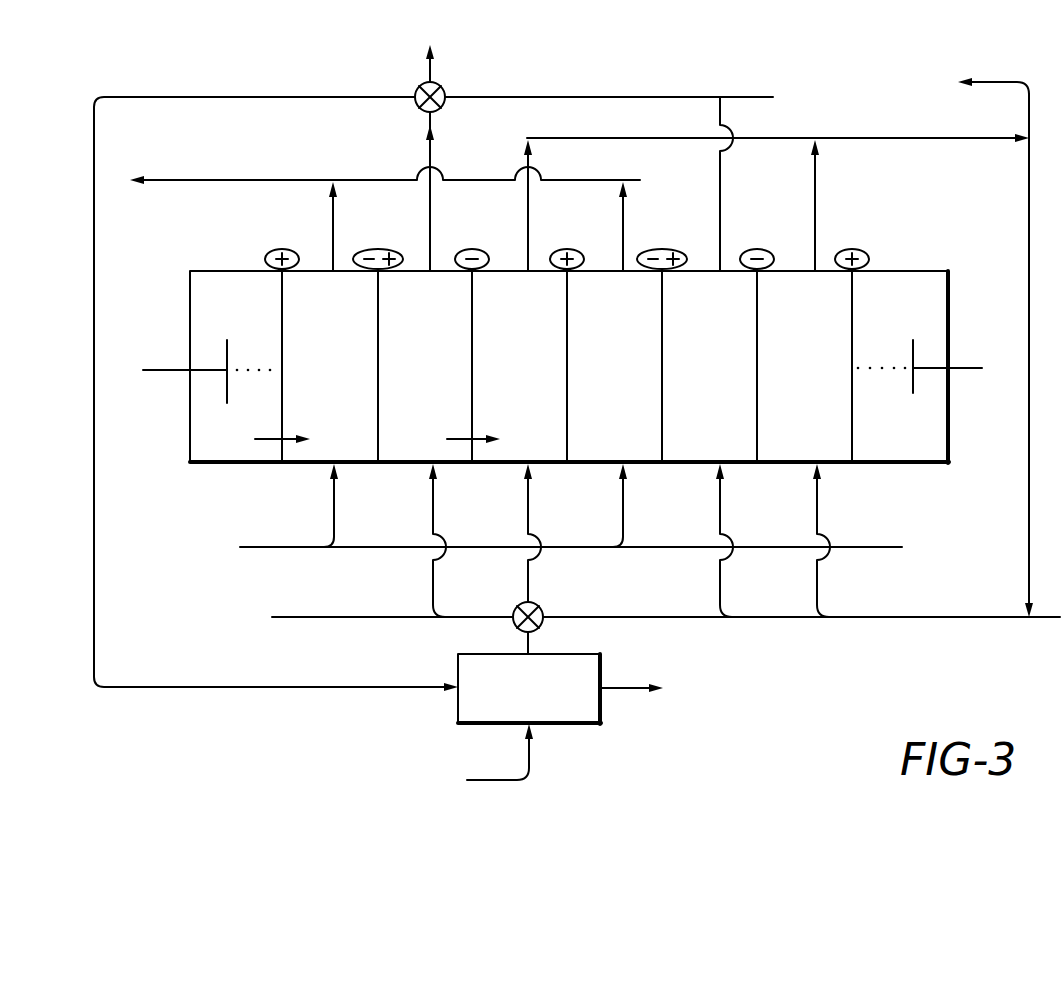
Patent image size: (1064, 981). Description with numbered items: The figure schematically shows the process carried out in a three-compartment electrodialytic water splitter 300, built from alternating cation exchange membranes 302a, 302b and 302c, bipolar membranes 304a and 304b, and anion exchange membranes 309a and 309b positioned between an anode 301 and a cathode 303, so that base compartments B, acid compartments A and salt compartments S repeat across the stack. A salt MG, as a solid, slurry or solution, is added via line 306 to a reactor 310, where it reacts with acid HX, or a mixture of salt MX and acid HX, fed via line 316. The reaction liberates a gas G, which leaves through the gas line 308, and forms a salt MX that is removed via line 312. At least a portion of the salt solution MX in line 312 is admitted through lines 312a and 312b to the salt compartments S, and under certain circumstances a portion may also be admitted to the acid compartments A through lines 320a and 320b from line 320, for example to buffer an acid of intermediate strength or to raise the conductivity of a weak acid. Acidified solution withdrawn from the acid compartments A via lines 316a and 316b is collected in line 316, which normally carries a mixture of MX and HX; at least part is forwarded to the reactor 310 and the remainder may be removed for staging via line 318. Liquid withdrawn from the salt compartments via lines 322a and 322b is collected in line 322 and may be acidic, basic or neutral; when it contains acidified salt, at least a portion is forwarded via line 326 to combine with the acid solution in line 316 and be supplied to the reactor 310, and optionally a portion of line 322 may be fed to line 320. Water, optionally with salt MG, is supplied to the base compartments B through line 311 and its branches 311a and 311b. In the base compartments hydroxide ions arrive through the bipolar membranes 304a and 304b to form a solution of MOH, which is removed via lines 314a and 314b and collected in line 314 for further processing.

The three-compartment electrodialytic water splitter 300 is at (962, 262).
The anode 301 is at (227, 393).
The cathode 303 is at (913, 393).
The cation exchange membrane 302a is at (283, 292).
The cation exchange membrane 302b is at (568, 292).
The cation exchange membrane 302c is at (853, 290).
The bipolar membrane 304a is at (379, 292).
The bipolar membrane 304b is at (663, 292).
The anion exchange membrane 309a is at (473, 292).
The anion exchange membrane 309b is at (758, 292).
The line 306 is at (488, 780).
The gas outlet line 308 is at (612, 688).
The reactor 310 is at (590, 723).
The water feed line to B compartments 311 is at (300, 547).
The line 311a is at (336, 503).
The line 311b is at (646, 498).
The line 312 is at (538, 637).
The line 312a is at (530, 503).
The line 312b is at (819, 503).
The line 314 is at (272, 183).
The line 314a is at (333, 222).
The line 314b is at (623, 222).
The line 316 is at (192, 97).
The line 316a is at (430, 140).
The line 316b is at (753, 160).
The line 318 is at (432, 70).
The line 320 is at (955, 617).
The line 320a is at (435, 503).
The line 320b is at (722, 503).
The line 322 is at (1029, 172).
The line 322a is at (530, 163).
The line 322b is at (845, 164).
The line 326 is at (1029, 108).